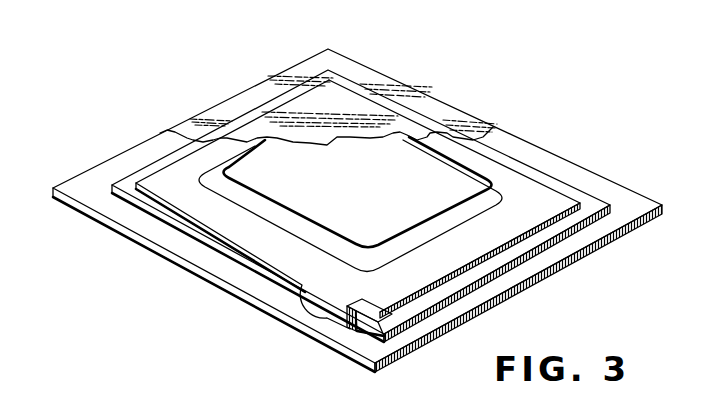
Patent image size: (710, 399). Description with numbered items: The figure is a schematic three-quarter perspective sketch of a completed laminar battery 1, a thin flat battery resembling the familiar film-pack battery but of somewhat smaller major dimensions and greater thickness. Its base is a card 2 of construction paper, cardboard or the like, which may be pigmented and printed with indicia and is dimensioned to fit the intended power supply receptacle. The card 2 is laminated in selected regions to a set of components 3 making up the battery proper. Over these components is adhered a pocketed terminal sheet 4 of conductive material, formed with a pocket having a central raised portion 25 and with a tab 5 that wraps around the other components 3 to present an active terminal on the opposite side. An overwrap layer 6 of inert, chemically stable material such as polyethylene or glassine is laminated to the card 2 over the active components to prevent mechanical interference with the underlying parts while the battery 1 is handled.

The laminar battery 1 is at (374, 205).
The card 2 is at (645, 197).
The set of components 3 is at (575, 220).
The pocketed terminal sheet 4 is at (520, 183).
The tab 5 is at (336, 322).
The overwrap layer 6 is at (362, 112).
The central raised portion 25 is at (277, 193).